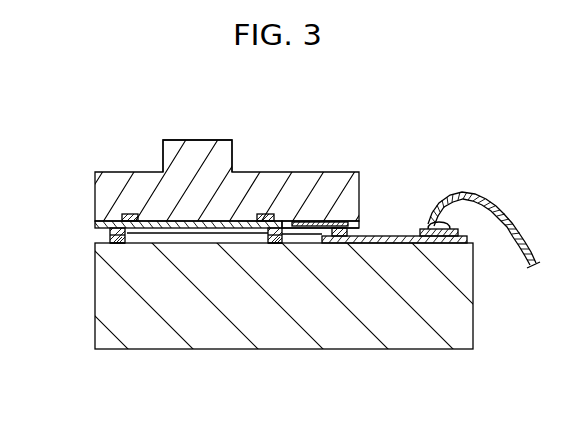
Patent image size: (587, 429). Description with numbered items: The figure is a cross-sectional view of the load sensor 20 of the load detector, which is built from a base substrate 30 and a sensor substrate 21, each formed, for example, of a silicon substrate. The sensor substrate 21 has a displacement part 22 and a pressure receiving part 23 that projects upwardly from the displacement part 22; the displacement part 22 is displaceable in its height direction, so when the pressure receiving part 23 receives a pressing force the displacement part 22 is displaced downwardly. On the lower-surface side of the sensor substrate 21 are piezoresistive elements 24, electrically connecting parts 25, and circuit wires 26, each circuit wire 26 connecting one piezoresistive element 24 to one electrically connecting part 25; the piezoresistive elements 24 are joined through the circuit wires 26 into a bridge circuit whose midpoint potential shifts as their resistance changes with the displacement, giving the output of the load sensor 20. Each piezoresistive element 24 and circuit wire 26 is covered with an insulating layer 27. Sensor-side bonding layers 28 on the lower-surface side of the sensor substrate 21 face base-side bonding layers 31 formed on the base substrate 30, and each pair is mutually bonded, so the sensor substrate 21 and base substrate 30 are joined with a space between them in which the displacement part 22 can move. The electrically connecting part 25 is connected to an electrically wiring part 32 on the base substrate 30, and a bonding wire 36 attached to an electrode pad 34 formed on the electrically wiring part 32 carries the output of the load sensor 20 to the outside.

The load sensor 20 is at (92, 133).
The sensor substrate 21 is at (148, 183).
The displacement part 22 is at (198, 199).
The pressure receiving part 23 is at (185, 142).
The piezoresistive element 24 is at (128, 213).
The electrically connecting part 25 is at (360, 230).
The circuit wire 26 is at (324, 222).
The insulating layer 27 is at (112, 221).
The sensor-side bonding layer 28 is at (108, 233).
The base substrate 30 is at (214, 336).
The base-side bonding layer 31 is at (108, 243).
The electrically wiring part 32 is at (360, 245).
The electrode pad 34 is at (442, 236).
The bonding wire 36 is at (461, 194).